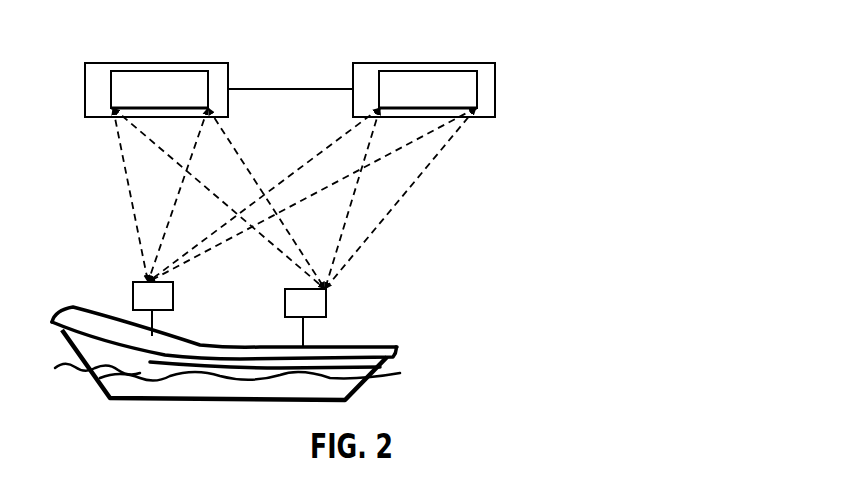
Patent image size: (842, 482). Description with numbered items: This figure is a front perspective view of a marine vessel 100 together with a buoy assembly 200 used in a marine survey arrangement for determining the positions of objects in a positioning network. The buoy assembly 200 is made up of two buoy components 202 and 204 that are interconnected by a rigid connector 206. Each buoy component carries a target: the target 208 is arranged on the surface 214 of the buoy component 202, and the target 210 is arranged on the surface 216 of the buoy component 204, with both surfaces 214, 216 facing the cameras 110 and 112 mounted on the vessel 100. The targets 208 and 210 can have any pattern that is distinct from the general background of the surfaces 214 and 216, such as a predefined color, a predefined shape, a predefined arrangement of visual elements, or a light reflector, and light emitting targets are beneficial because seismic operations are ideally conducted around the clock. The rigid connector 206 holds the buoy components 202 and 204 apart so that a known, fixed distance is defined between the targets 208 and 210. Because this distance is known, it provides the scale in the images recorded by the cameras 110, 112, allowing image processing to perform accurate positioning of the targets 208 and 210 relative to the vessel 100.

The marine vessel 100 is at (397, 345).
The camera 110 is at (132, 292).
The camera 112 is at (285, 303).
The buoy assembly 200 is at (565, 118).
The buoy component 202 is at (143, 62).
The buoy component 204 is at (415, 62).
The rigid connector 206 is at (265, 88).
The target 208 is at (110, 90).
The target 210 is at (477, 85).
The surface 214 is at (217, 80).
The surface 216 is at (486, 68).